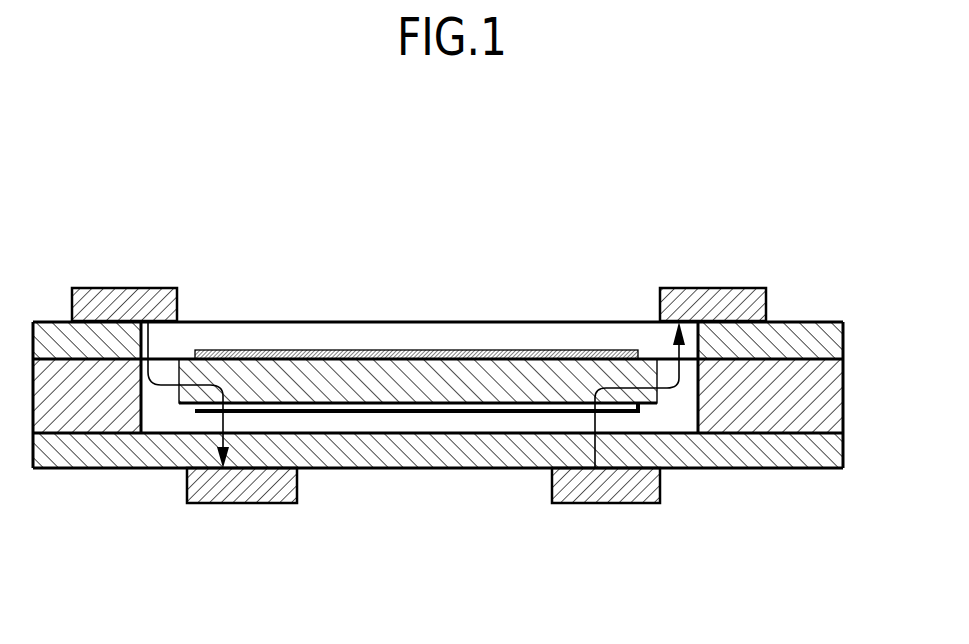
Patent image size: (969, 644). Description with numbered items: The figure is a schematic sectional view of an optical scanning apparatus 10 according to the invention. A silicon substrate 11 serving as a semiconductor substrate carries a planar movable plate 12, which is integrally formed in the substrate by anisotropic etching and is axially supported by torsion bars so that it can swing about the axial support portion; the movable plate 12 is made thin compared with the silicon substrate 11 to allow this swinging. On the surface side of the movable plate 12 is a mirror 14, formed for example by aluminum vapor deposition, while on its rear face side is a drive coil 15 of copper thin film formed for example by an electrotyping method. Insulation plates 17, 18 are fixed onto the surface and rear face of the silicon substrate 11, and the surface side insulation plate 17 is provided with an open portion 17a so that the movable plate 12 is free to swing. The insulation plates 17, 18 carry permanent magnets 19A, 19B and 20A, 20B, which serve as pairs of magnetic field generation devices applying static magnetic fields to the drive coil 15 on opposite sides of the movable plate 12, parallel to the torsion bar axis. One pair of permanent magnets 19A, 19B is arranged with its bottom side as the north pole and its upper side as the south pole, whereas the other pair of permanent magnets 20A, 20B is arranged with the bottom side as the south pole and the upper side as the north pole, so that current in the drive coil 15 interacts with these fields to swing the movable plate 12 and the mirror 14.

The optical scanning apparatus 10 is at (583, 277).
The silicon substrate 11 is at (790, 405).
The movable plate 12 is at (338, 380).
The mirror 14 is at (448, 350).
The drive coil 15 is at (427, 412).
The insulation plate 17 is at (807, 337).
The open portion 17a is at (210, 337).
The insulation plate 18 is at (800, 450).
The permanent magnet 19A is at (122, 303).
The permanent magnet 19B is at (241, 487).
The permanent magnet 20A is at (708, 303).
The permanent magnet 20B is at (610, 487).